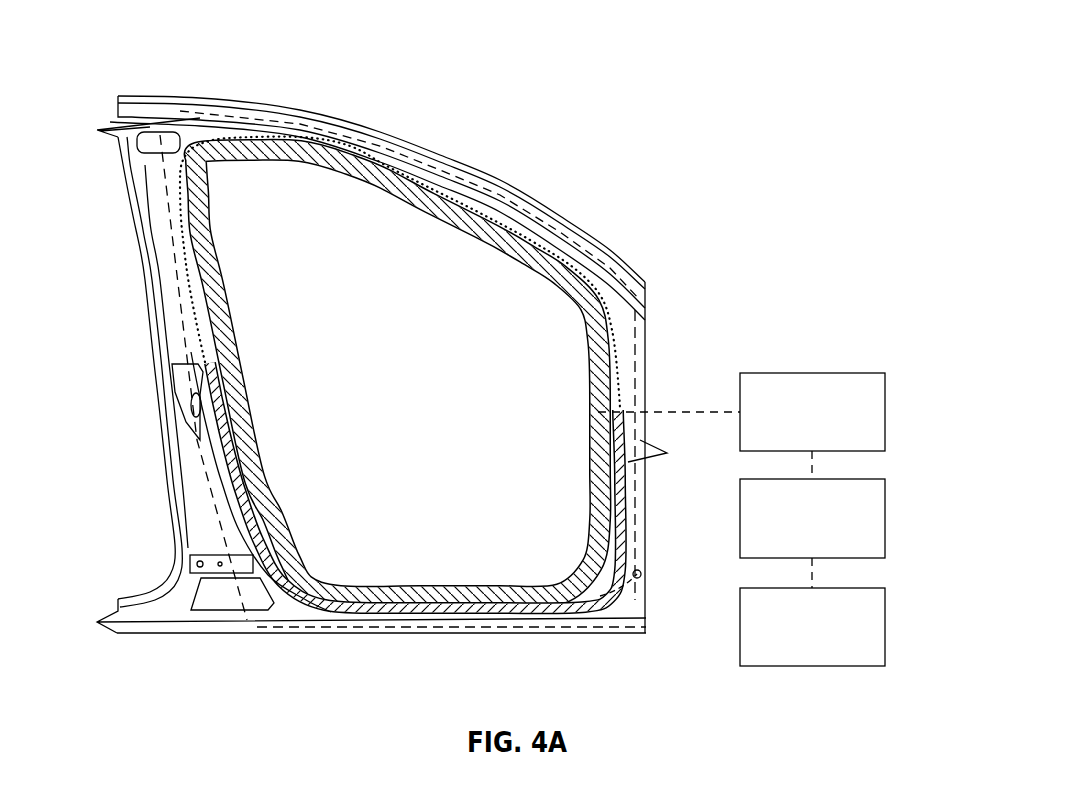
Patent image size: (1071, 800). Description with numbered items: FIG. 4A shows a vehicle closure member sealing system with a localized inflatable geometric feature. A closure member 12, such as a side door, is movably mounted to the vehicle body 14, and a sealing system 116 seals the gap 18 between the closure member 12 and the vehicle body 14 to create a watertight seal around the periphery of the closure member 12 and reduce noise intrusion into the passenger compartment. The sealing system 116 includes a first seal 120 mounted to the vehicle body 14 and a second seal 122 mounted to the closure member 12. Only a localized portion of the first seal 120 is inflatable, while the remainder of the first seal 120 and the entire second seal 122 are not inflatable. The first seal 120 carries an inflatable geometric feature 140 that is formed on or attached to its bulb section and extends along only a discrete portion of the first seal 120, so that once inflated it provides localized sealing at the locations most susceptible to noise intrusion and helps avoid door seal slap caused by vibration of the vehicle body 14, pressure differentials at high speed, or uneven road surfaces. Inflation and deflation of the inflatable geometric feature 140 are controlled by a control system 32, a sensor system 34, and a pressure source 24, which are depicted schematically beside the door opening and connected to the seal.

The closure member 12 is at (282, 607).
The vehicle body 14 is at (483, 190).
The gap 18 is at (612, 393).
The pressure source 24 is at (887, 412).
The control system 32 is at (887, 519).
The sensor system 34 is at (887, 626).
The sealing system 116 is at (347, 126).
The first seal 120 is at (435, 608).
The second seal 122 is at (503, 592).
The inflatable geometric feature 140 is at (562, 257).